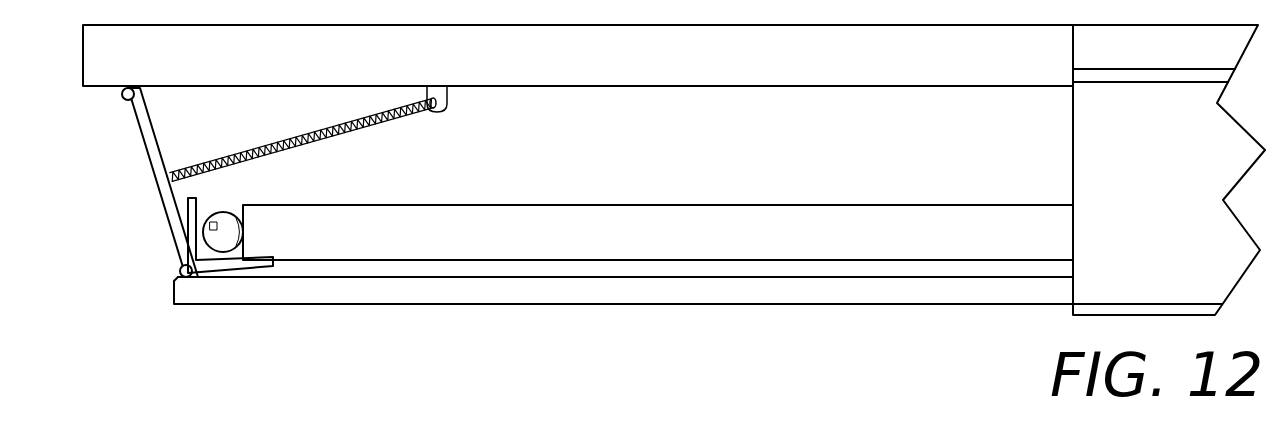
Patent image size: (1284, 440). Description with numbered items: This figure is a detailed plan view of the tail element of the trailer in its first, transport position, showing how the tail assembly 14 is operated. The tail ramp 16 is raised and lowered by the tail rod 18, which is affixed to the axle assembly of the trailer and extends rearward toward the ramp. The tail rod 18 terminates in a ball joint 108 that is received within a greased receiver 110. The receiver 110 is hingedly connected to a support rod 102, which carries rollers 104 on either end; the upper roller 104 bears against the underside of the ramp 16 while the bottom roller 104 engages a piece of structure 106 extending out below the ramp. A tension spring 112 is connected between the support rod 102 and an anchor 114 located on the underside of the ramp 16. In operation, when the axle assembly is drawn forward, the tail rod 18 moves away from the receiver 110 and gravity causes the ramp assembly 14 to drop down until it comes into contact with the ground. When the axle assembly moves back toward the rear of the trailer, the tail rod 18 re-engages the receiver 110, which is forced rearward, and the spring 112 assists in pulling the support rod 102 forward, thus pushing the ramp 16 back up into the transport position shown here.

The tail assembly 14 is at (114, 276).
The tail ramp 16 is at (553, 87).
The tail rod 18 is at (528, 205).
The support rod 102 is at (150, 172).
The rollers 104 is at (124, 92).
The piece of structure 106 is at (373, 305).
The ball joint 108 is at (236, 215).
The greased receiver 110 is at (200, 218).
The tension spring 112 is at (276, 144).
The anchor 114 is at (447, 105).